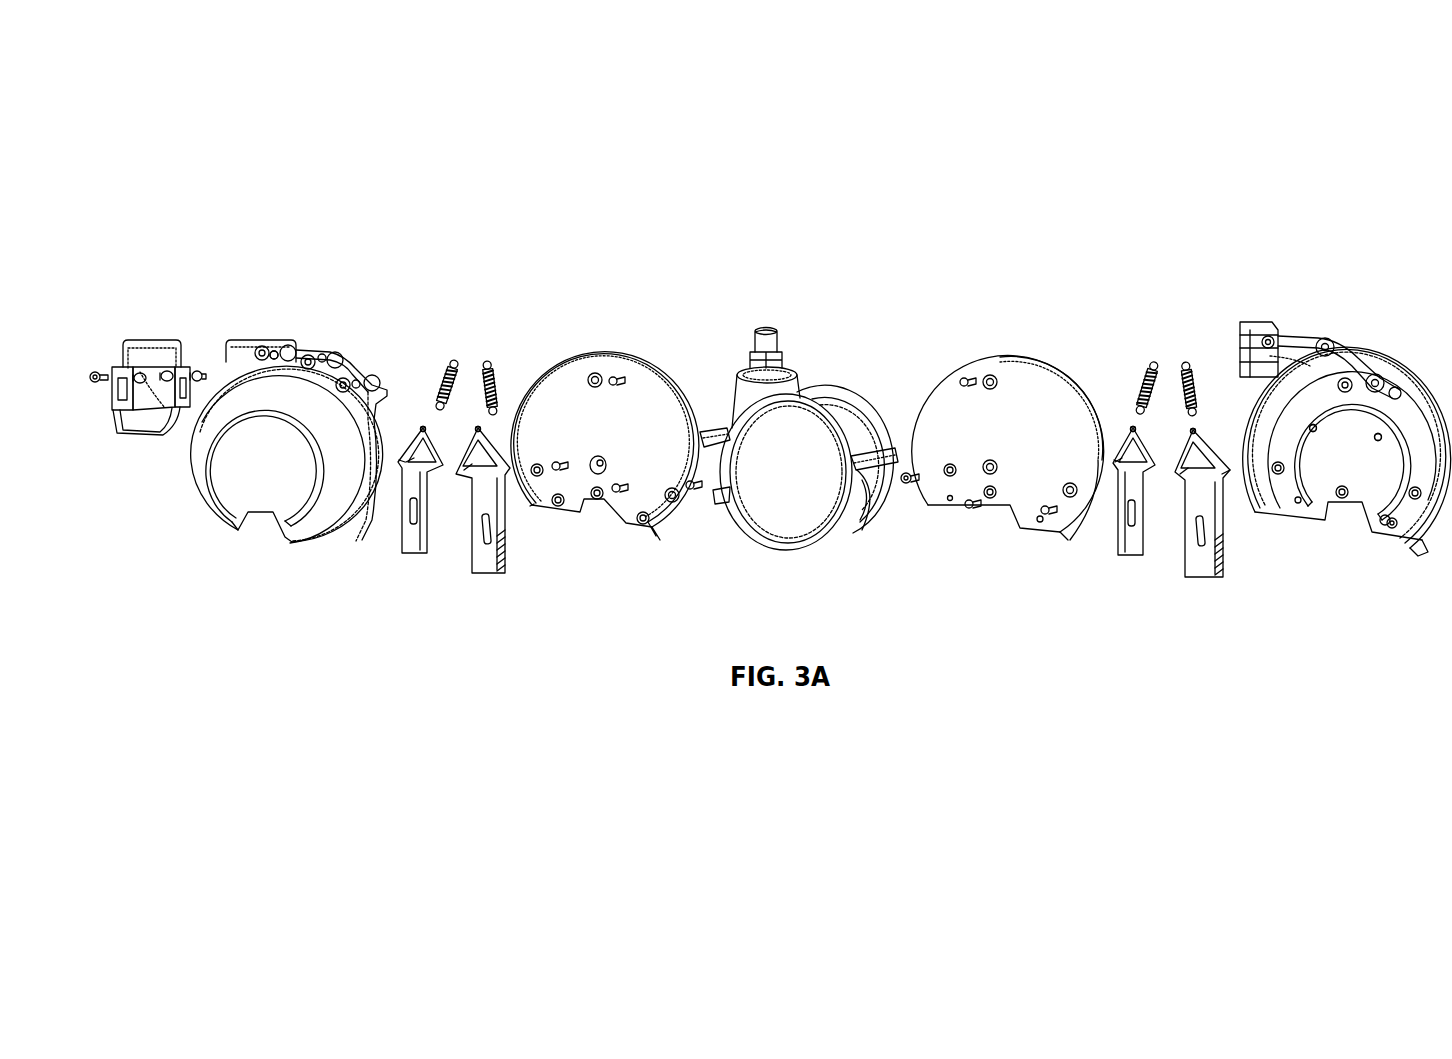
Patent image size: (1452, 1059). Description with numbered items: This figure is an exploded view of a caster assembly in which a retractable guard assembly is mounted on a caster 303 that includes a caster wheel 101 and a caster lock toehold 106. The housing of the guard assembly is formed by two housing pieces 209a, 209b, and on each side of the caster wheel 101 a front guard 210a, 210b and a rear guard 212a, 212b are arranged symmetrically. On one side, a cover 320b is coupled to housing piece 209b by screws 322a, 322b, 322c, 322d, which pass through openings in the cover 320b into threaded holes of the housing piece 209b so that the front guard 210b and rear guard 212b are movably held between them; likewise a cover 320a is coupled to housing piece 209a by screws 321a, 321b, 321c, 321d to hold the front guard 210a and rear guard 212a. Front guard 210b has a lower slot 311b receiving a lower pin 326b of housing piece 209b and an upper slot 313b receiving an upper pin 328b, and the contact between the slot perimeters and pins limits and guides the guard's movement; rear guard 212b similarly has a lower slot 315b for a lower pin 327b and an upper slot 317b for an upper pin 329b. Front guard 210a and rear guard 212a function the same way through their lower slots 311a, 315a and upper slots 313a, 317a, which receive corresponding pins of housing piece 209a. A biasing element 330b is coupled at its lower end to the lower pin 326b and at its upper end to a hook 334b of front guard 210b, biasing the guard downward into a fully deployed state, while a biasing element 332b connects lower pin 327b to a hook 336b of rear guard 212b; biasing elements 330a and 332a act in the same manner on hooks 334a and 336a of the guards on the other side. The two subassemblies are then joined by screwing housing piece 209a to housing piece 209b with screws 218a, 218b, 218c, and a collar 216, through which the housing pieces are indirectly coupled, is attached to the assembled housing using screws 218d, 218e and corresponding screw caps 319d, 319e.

The caster wheel 101 is at (830, 395).
The caster lock toehold 106 is at (714, 430).
The housing piece 209a is at (205, 458).
The housing piece 209b is at (1390, 392).
The front guard 210a is at (407, 572).
The front guard 210b is at (1116, 572).
The rear guard 212a is at (502, 580).
The rear guard 212b is at (1205, 583).
The collar 216 is at (145, 372).
The screw 218a is at (272, 352).
The screw 218b is at (318, 353).
The screw 218c is at (356, 380).
The screw 218d is at (99, 370).
The screw 218e is at (178, 392).
The caster 303 is at (787, 410).
The lower slot 311a is at (408, 522).
The lower slot 311b is at (1125, 522).
The upper slot 313a is at (400, 460).
The upper slot 313b is at (1117, 465).
The lower slot 315a is at (486, 538).
The lower slot 315b is at (1200, 540).
The upper slot 317a is at (528, 505).
The upper slot 317b is at (1226, 478).
The screw cap 319d is at (143, 372).
The screw cap 319e is at (175, 372).
The cover 320a is at (597, 362).
The cover 320b is at (1010, 380).
The screw 321a is at (618, 376).
The screw 321b is at (560, 472).
The screw 321c is at (620, 494).
The screw 321d is at (692, 490).
The screw 322a is at (964, 378).
The screw 322b is at (908, 484).
The screw 322c is at (970, 510).
The screw 322d is at (1046, 515).
The lower pin 326b is at (1296, 505).
The lower pin 327b is at (1392, 528).
The upper pin 328b is at (1317, 424).
The upper pin 329b is at (1377, 443).
The biasing element 330a is at (452, 362).
The biasing element 330b is at (1164, 368).
The biasing element 332a is at (478, 378).
The biasing element 332b is at (1196, 374).
The hook 334a is at (422, 428).
The hook 334b is at (1134, 427).
The hook 336a is at (480, 427).
The hook 336b is at (1195, 428).